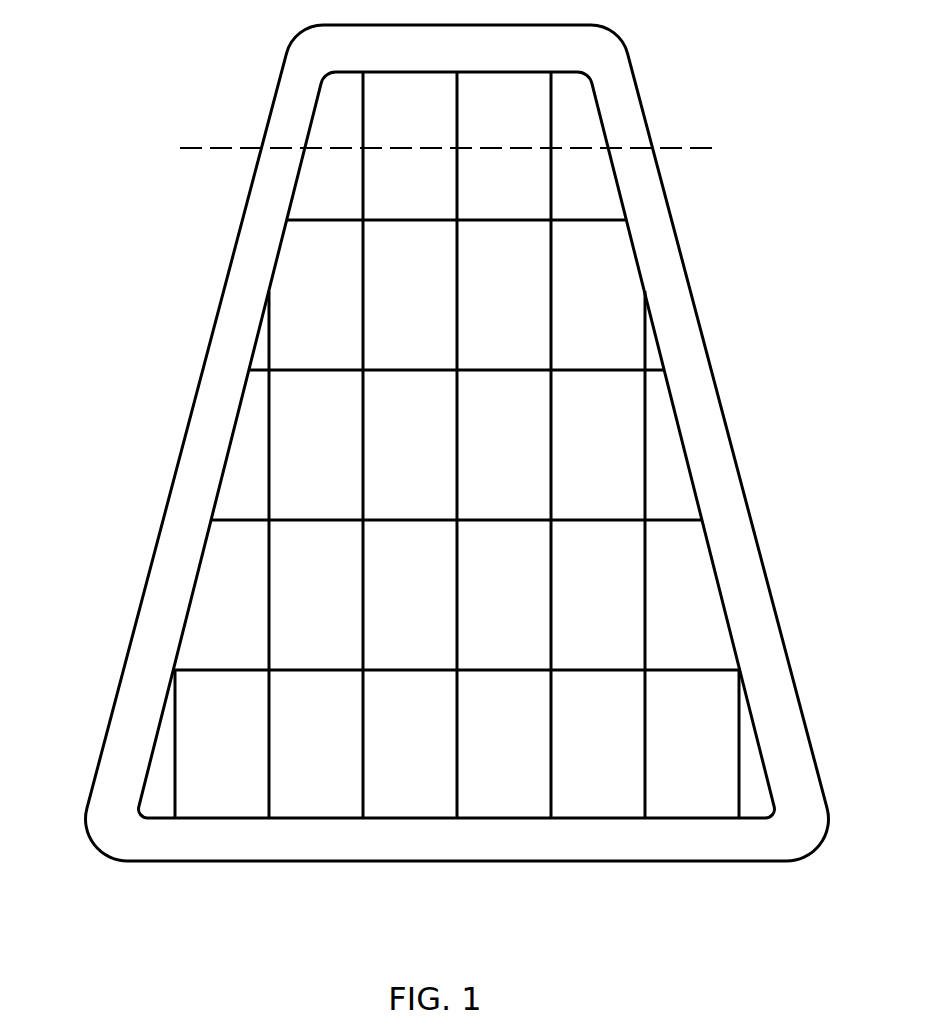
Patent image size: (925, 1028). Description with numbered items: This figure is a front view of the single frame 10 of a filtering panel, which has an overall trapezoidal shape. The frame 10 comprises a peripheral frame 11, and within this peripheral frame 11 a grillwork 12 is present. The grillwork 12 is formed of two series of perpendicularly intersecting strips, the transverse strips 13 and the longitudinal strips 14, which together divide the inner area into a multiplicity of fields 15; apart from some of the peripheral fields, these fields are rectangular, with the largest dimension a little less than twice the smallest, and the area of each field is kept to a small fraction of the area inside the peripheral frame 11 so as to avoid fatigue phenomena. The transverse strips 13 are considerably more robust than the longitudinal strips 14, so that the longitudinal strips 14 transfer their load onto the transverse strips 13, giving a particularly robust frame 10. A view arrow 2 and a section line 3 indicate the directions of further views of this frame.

The frame 10 is at (714, 364).
The peripheral frame 11 is at (722, 470).
The grillwork 12 is at (652, 598).
The transverse strips 13 is at (234, 670).
The longitudinal strips 14 is at (363, 788).
The cells 15 is at (491, 195).
The view direction of FIG. 2 is at (80, 435).
The section line of FIG. 3 is at (193, 160).